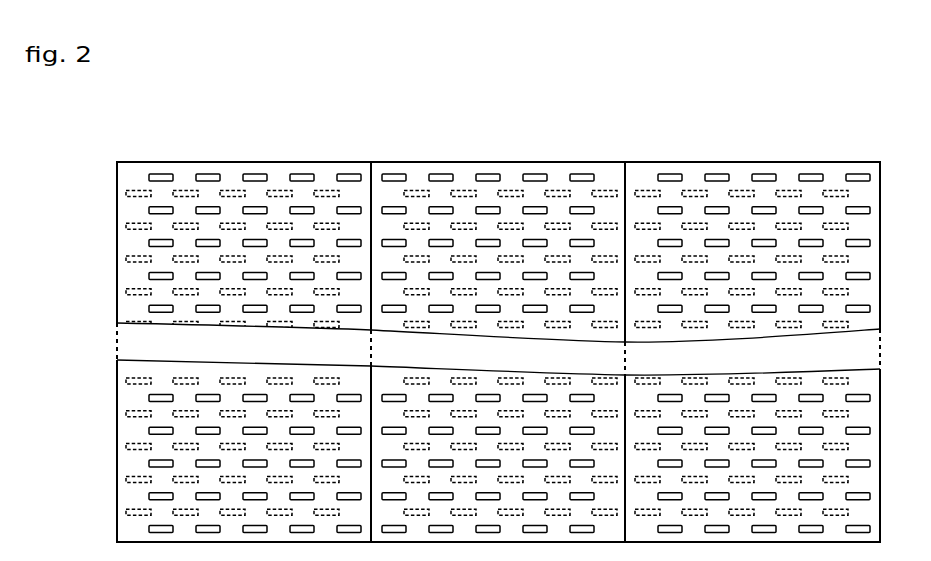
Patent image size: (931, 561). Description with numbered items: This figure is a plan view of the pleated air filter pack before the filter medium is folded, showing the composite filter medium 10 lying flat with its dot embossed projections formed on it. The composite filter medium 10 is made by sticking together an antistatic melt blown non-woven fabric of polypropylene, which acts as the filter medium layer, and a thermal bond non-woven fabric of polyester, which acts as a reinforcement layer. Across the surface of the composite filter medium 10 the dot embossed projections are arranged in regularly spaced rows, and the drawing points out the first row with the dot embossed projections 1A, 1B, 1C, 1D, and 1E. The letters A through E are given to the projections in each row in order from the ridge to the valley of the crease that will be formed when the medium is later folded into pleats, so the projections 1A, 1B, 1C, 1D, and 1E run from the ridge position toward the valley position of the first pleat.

The composite filter medium 10 is at (387, 162).
The dot embossed projection 1A is at (393, 176).
The dot embossed projection 1B is at (442, 176).
The dot embossed projection 1C is at (490, 176).
The dot embossed projection 1D is at (537, 176).
The dot embossed projection 1E is at (583, 176).